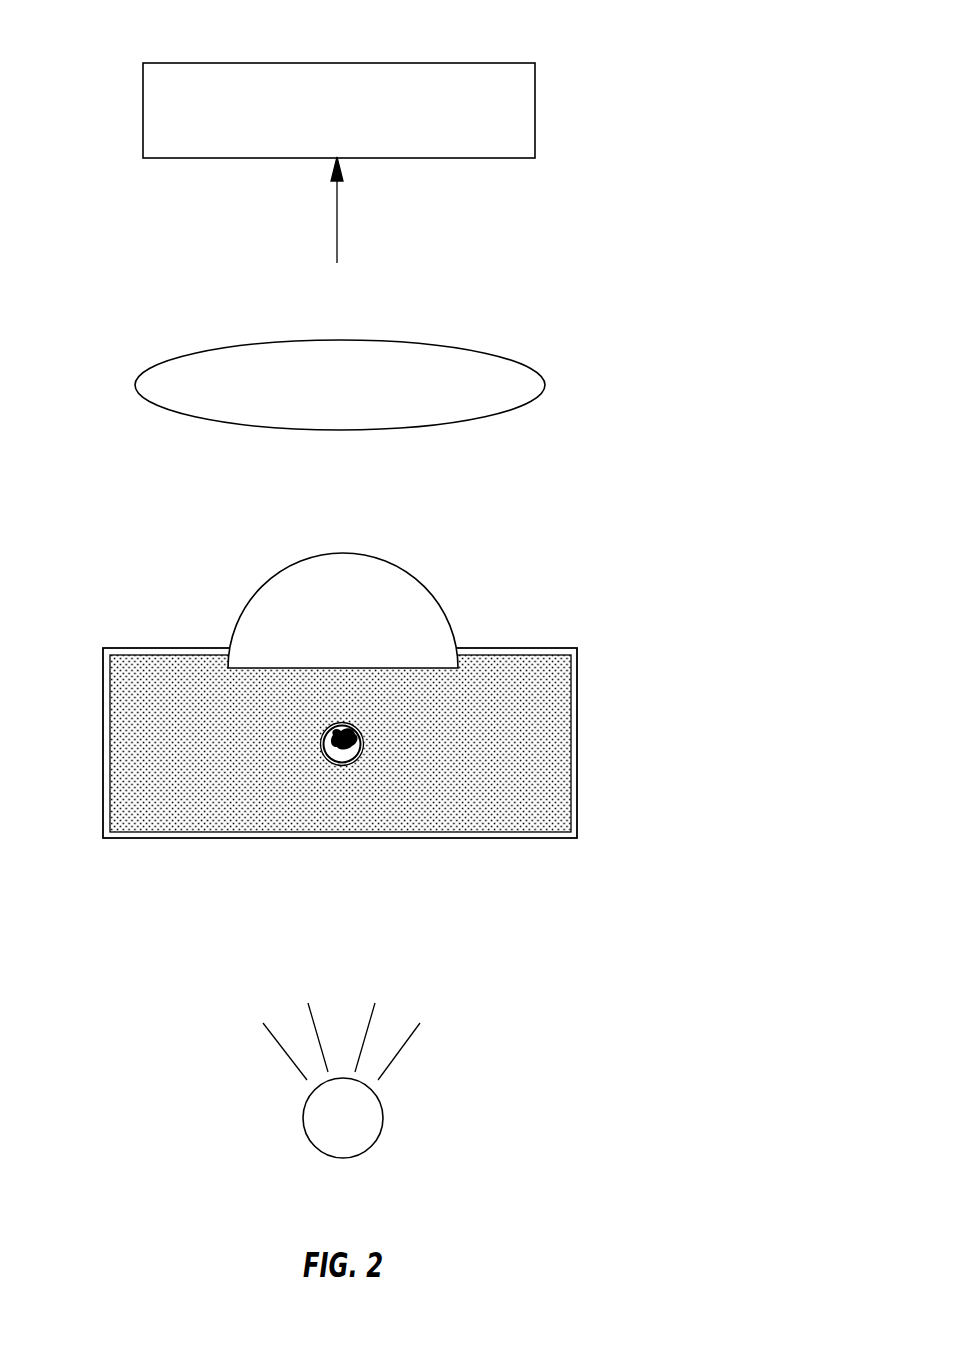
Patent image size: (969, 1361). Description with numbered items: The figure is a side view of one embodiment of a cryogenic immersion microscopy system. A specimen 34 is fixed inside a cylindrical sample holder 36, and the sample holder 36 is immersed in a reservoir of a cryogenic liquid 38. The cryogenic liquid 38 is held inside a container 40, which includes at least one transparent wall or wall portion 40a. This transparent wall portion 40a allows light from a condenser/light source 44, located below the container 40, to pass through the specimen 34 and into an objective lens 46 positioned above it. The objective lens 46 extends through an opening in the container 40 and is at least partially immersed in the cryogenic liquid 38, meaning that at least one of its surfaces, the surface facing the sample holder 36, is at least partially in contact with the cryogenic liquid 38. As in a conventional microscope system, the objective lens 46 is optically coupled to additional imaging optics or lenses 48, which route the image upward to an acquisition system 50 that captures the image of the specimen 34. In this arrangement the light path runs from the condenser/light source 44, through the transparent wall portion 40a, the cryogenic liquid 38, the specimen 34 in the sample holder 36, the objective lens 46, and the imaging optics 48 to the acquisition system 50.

The acquisition system 50 is at (447, 76).
The imaging optics/lenses 48 is at (463, 368).
The objective lens 46 is at (400, 603).
The cryogenic liquid 38 is at (537, 680).
The container 40 is at (127, 652).
The transparent wall portion 40a is at (343, 846).
The sample holder 36 is at (350, 765).
The specimen 34 is at (338, 765).
The condenser/light source 44 is at (365, 1127).